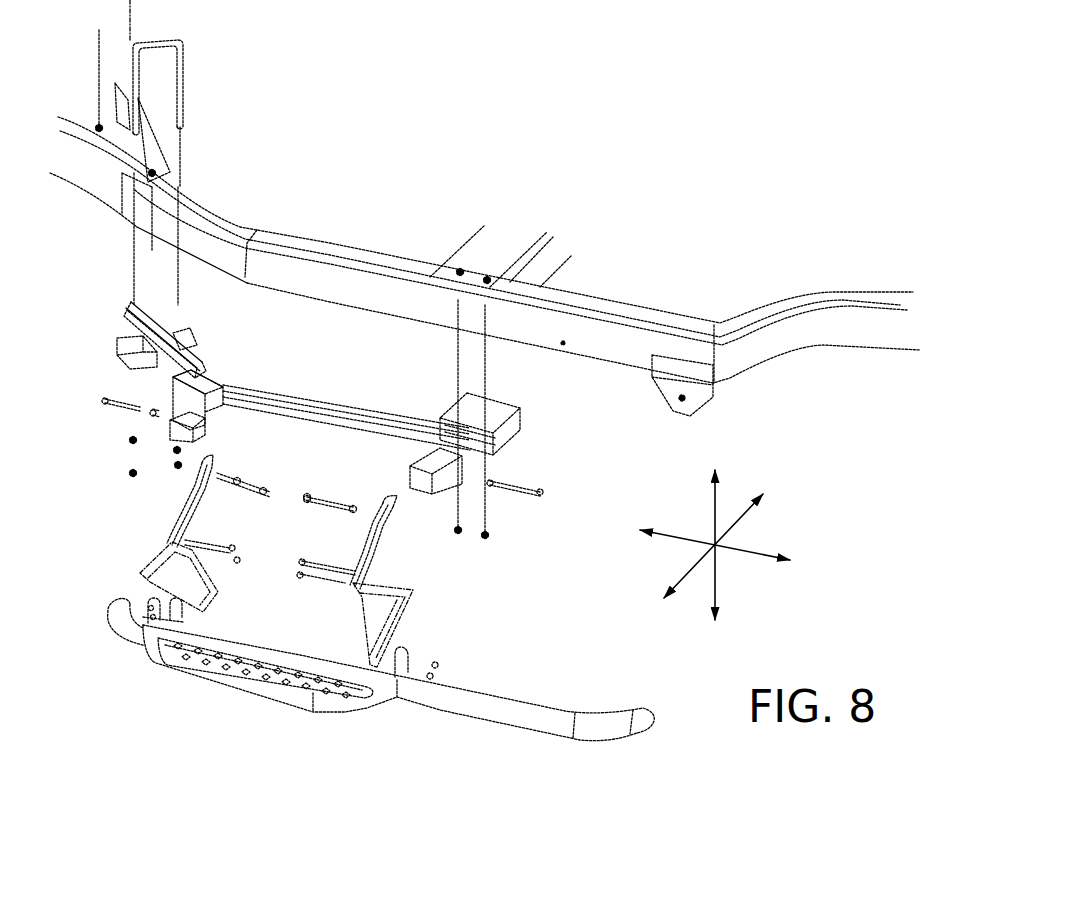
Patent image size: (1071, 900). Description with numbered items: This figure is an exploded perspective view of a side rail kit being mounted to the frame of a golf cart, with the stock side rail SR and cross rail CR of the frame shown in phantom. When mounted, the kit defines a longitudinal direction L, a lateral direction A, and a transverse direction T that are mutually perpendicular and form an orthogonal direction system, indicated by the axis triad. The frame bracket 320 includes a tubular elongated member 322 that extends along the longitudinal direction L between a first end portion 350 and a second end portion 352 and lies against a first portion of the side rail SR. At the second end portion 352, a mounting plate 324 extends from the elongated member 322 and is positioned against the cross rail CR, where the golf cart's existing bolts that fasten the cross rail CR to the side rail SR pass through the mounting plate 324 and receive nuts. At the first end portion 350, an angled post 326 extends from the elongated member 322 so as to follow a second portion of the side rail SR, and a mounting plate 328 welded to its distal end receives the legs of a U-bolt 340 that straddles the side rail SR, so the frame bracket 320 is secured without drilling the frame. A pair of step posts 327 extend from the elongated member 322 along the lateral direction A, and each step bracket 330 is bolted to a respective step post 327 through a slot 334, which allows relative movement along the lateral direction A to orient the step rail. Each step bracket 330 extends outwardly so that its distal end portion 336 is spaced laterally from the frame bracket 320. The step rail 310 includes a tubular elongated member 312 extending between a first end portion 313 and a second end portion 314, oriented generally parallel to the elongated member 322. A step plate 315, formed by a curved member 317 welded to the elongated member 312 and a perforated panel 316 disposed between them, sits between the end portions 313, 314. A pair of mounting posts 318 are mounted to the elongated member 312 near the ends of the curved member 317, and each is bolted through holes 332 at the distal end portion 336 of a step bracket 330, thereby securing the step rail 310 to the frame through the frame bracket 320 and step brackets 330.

The step rail 310 is at (349, 703).
The elongated member 312 is at (465, 703).
The first end portion 313 is at (105, 616).
The second end portion 314 is at (645, 746).
The step plate 315 is at (340, 712).
The perforated panel 316 is at (285, 690).
The curved member 317 is at (230, 687).
The mounting post 318 is at (170, 613).
The frame bracket 320 is at (183, 387).
The elongated member 322 is at (328, 425).
The mounting plate 324 is at (508, 427).
The angled post 326 is at (143, 323).
The step post 327 is at (175, 432).
The mounting plate 328 is at (147, 348).
The step bracket 330 is at (197, 507).
The holes 332 is at (353, 590).
The slot 334 is at (390, 524).
The distal end portion 336 is at (163, 532).
The U-bolt 340 is at (183, 83).
The first end portion 350 is at (226, 374).
The second end portion 352 is at (482, 430).
The side rail SR is at (340, 282).
The cross rail CR is at (537, 264).
The transverse direction T is at (713, 518).
The lateral direction A is at (687, 572).
The longitudinal direction L is at (742, 553).